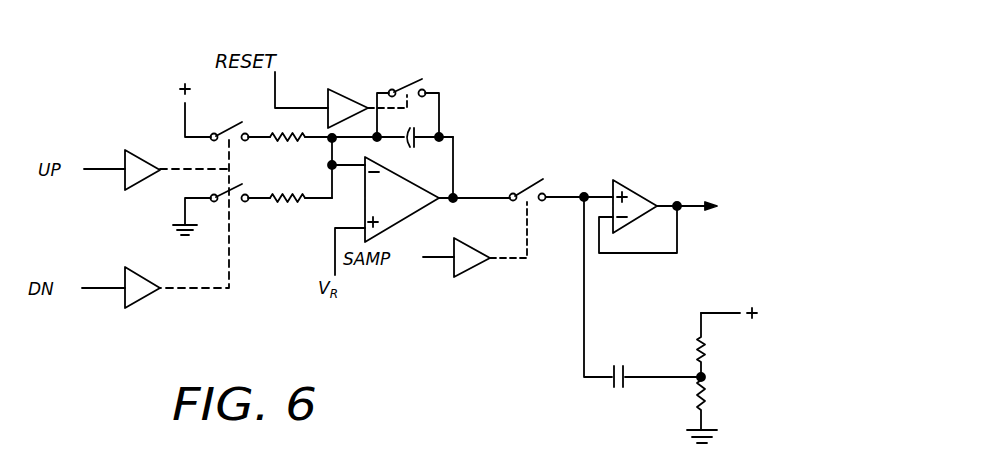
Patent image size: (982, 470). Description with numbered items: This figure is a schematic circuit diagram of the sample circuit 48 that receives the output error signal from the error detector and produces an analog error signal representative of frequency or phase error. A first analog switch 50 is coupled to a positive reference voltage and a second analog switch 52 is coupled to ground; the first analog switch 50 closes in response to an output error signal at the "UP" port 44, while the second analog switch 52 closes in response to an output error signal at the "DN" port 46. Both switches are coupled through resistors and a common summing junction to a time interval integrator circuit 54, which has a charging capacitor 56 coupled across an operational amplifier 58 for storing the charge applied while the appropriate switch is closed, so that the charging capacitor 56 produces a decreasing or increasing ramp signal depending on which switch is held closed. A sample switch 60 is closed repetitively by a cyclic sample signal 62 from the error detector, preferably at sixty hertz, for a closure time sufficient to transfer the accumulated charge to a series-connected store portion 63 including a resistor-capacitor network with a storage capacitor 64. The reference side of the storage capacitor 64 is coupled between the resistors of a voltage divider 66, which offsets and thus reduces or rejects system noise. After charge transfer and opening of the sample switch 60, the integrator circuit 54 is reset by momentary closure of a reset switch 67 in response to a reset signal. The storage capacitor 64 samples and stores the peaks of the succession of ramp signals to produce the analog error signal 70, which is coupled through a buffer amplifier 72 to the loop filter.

The "UP" port 44 is at (104, 169).
The "DN" port 46 is at (98, 290).
The sample circuit 48 is at (497, 127).
The first analog switch 50 is at (236, 127).
The second analog switch 52 is at (223, 186).
The time interval integrator circuit 54 is at (377, 80).
The charging capacitor 56 is at (419, 148).
The operational amplifier 58 is at (426, 210).
The sample switch 60 is at (532, 180).
The cyclic sample signal 62 is at (402, 268).
The store portion 63 is at (602, 178).
The storage capacitor 64 is at (614, 383).
The voltage divider 66 is at (719, 377).
The reset switch 67 is at (418, 80).
The analog error signal 70 is at (692, 203).
The buffer amplifier 72 is at (627, 180).